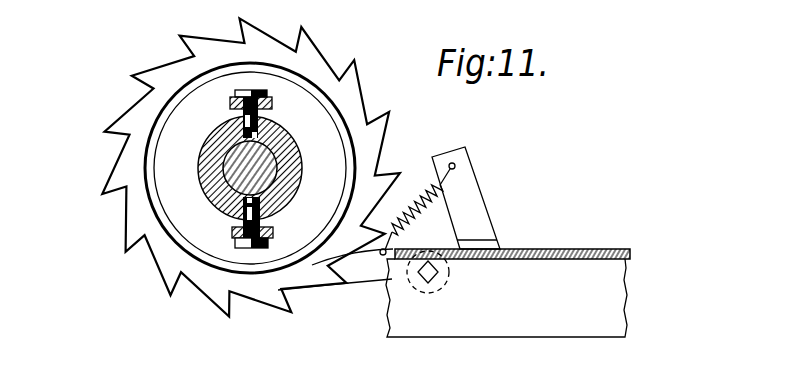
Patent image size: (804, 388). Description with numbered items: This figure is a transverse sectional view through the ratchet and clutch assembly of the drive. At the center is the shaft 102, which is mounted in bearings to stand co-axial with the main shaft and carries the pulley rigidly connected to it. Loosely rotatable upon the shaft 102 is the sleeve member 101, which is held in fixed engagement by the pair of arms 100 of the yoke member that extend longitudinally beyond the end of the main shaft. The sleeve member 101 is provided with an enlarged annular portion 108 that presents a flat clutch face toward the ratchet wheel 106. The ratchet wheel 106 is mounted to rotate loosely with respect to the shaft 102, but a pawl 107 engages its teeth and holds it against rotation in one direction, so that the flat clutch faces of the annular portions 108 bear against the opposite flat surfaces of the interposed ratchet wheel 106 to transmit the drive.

The arms 100 is at (268, 101).
The sleeve member 101 is at (213, 177).
The shaft 102 is at (231, 182).
The ratchet wheel 106 is at (340, 98).
The pawl 107 is at (365, 273).
The enlarged annular portion 108 is at (173, 128).